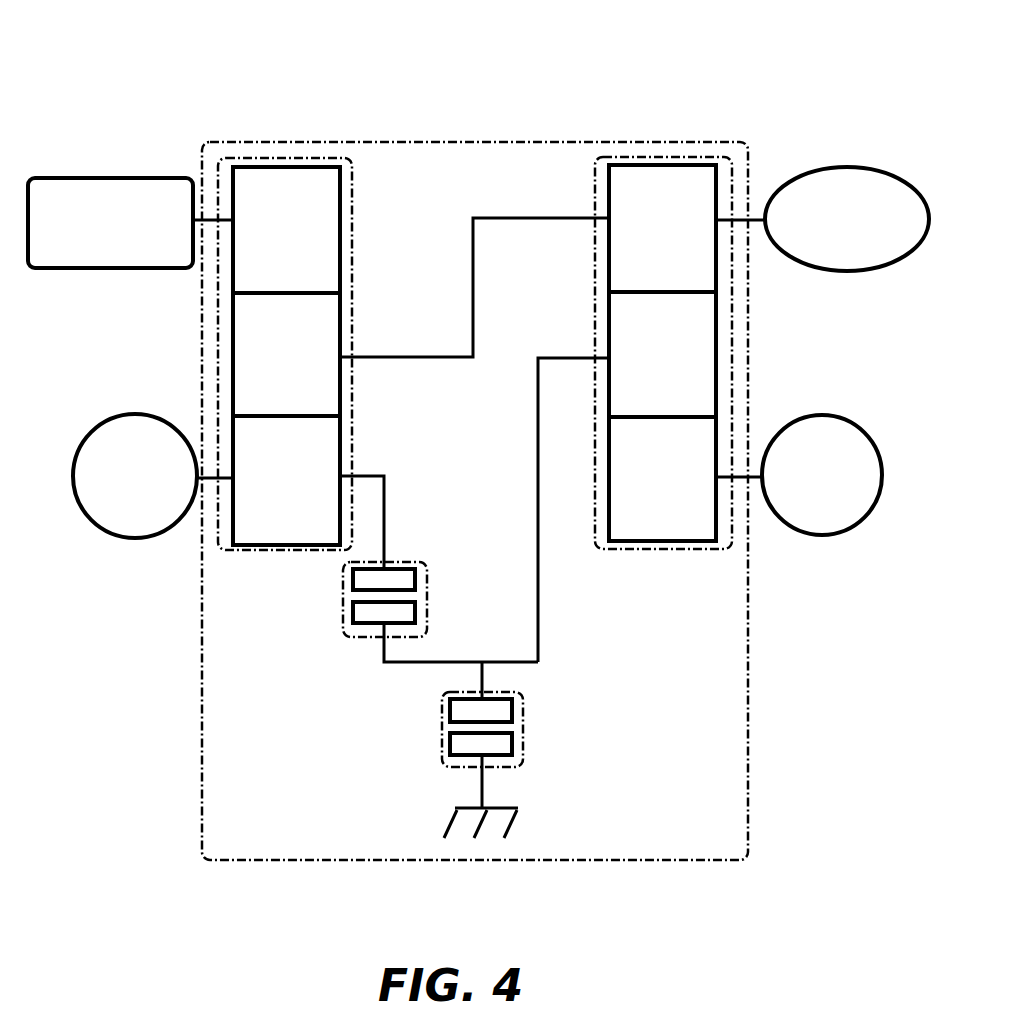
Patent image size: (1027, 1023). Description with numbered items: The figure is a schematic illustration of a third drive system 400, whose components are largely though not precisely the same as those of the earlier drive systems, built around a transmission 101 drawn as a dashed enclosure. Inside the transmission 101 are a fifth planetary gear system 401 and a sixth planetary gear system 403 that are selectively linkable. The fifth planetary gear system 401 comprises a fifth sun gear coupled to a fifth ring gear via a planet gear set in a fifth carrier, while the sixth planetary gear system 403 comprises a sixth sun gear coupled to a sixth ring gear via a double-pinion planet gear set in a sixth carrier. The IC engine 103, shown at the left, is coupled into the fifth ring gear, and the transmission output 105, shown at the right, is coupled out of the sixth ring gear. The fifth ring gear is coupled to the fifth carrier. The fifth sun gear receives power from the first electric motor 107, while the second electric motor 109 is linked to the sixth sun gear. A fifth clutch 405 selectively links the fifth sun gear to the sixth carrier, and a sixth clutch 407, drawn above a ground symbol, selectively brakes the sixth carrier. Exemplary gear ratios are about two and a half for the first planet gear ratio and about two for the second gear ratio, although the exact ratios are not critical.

The third drive system 400 is at (173, 83).
The transmission 101 is at (496, 180).
The IC engine 103 is at (86, 256).
The transmission output 105 is at (822, 219).
The first electric motor 107 is at (110, 507).
The second electric motor 109 is at (797, 507).
The fifth planetary gear system 401 is at (352, 291).
The sixth planetary gear system 403 is at (597, 279).
The fifth clutch 405 is at (423, 562).
The sixth clutch 407 is at (525, 721).